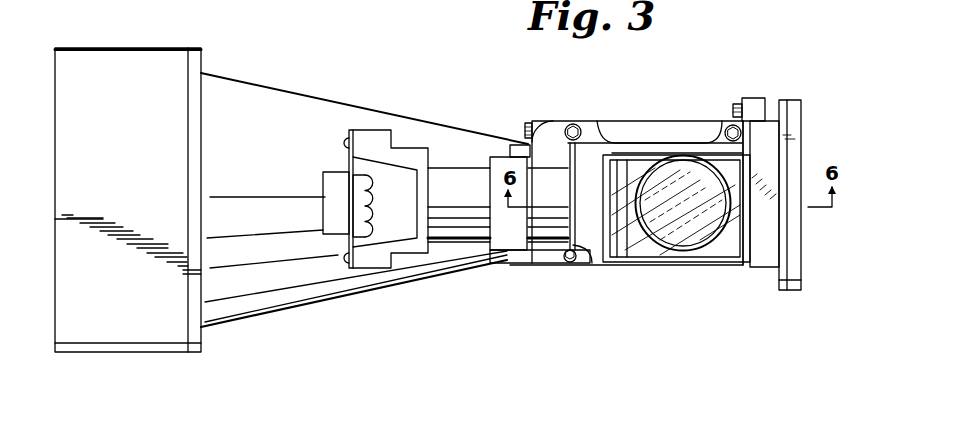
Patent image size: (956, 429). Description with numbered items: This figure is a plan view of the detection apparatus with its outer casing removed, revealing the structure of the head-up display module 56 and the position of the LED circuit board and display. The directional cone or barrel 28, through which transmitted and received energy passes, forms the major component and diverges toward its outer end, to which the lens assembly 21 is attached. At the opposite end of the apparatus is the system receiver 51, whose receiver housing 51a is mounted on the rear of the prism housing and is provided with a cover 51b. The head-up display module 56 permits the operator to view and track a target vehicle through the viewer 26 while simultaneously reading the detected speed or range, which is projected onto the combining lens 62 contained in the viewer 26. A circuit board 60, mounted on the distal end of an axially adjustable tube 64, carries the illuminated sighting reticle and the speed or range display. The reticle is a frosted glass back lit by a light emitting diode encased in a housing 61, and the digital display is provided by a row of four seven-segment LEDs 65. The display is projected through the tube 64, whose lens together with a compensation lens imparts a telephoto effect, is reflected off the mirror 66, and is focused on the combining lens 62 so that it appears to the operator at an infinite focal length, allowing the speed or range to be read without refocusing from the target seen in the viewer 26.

The lens assembly 21 is at (112, 72).
The directional cone or barrel 28 is at (243, 82).
The head-up display module 56 is at (545, 246).
The circuit board 60 is at (347, 160).
The housing 61 is at (323, 184).
The axially adjustable tube 64 is at (457, 170).
The seven-segment LEDs 65 is at (384, 200).
The combining lens 62 is at (643, 160).
The mirror 66 is at (677, 222).
The viewer 26 is at (705, 276).
The system receiver 51 is at (807, 96).
The receiver housing 51a is at (770, 121).
The cover 51b is at (802, 270).